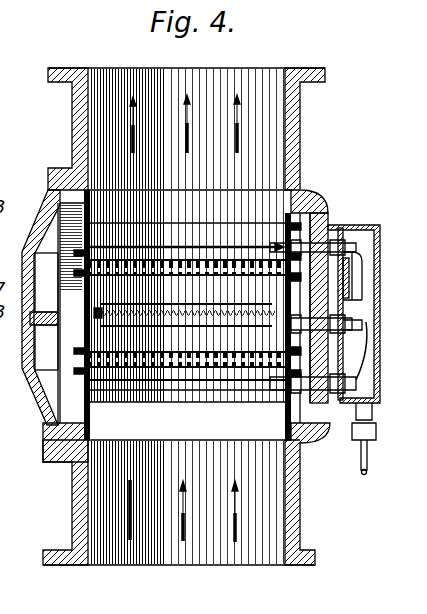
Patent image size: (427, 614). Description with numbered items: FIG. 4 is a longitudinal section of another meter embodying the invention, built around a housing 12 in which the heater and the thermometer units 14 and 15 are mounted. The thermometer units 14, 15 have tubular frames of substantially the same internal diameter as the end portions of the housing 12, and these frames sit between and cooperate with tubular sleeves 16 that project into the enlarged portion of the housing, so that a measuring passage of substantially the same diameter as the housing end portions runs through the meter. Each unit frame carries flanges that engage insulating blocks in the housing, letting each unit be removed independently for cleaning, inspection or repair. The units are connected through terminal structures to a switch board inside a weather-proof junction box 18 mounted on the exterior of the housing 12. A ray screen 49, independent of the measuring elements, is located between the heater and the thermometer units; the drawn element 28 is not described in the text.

The housing 12 is at (302, 120).
The thermometer unit 14 is at (272, 393).
The thermometer unit 15 is at (283, 233).
The tubular sleeve 16 is at (90, 207).
The weather-proof junction box 18 is at (373, 226).
The perforated bar 28 is at (258, 364).
The ray screen 49 is at (246, 283).